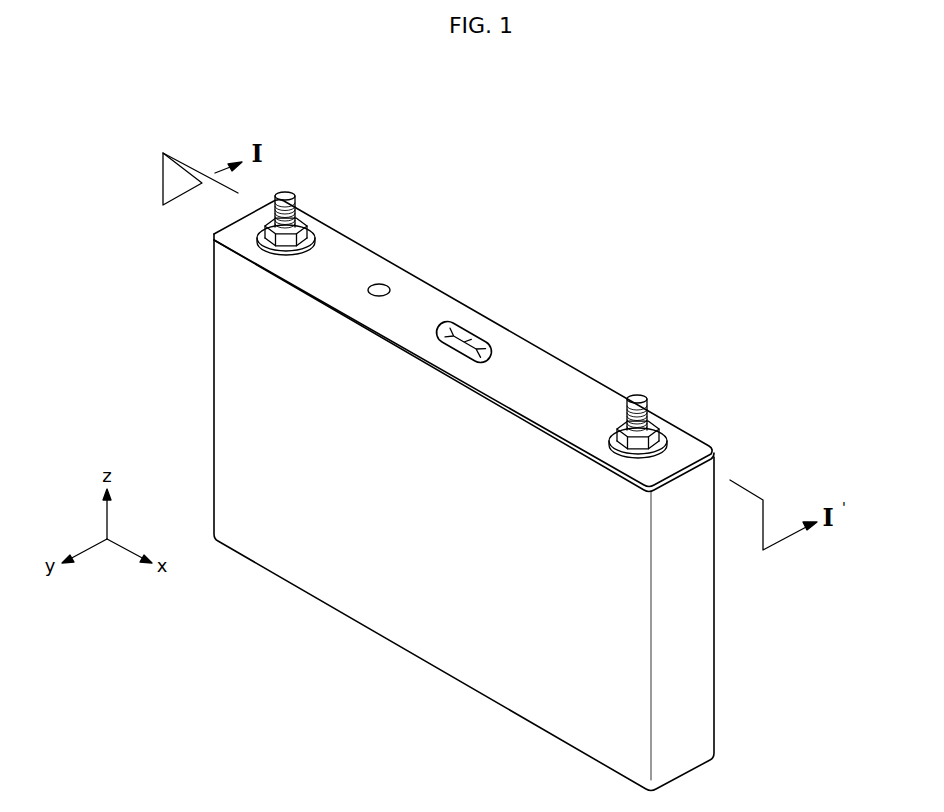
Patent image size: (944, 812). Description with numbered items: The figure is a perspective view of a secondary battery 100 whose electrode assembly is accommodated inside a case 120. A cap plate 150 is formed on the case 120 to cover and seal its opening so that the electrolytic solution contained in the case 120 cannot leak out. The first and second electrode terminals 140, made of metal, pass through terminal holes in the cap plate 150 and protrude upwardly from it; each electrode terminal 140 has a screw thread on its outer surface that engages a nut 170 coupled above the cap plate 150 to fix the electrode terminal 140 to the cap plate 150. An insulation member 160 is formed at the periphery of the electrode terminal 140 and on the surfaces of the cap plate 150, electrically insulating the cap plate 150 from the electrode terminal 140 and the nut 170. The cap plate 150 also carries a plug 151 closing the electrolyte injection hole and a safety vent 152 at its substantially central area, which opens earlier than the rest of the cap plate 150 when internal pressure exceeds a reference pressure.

The secondary battery 100 is at (777, 156).
The case 120 is at (418, 640).
The electrode terminal 140 is at (287, 197).
The cap plate 150 is at (535, 355).
The plug 151 is at (383, 288).
The safety vent 152 is at (467, 338).
The insulation member 160 is at (663, 428).
The nut 170 is at (303, 218).